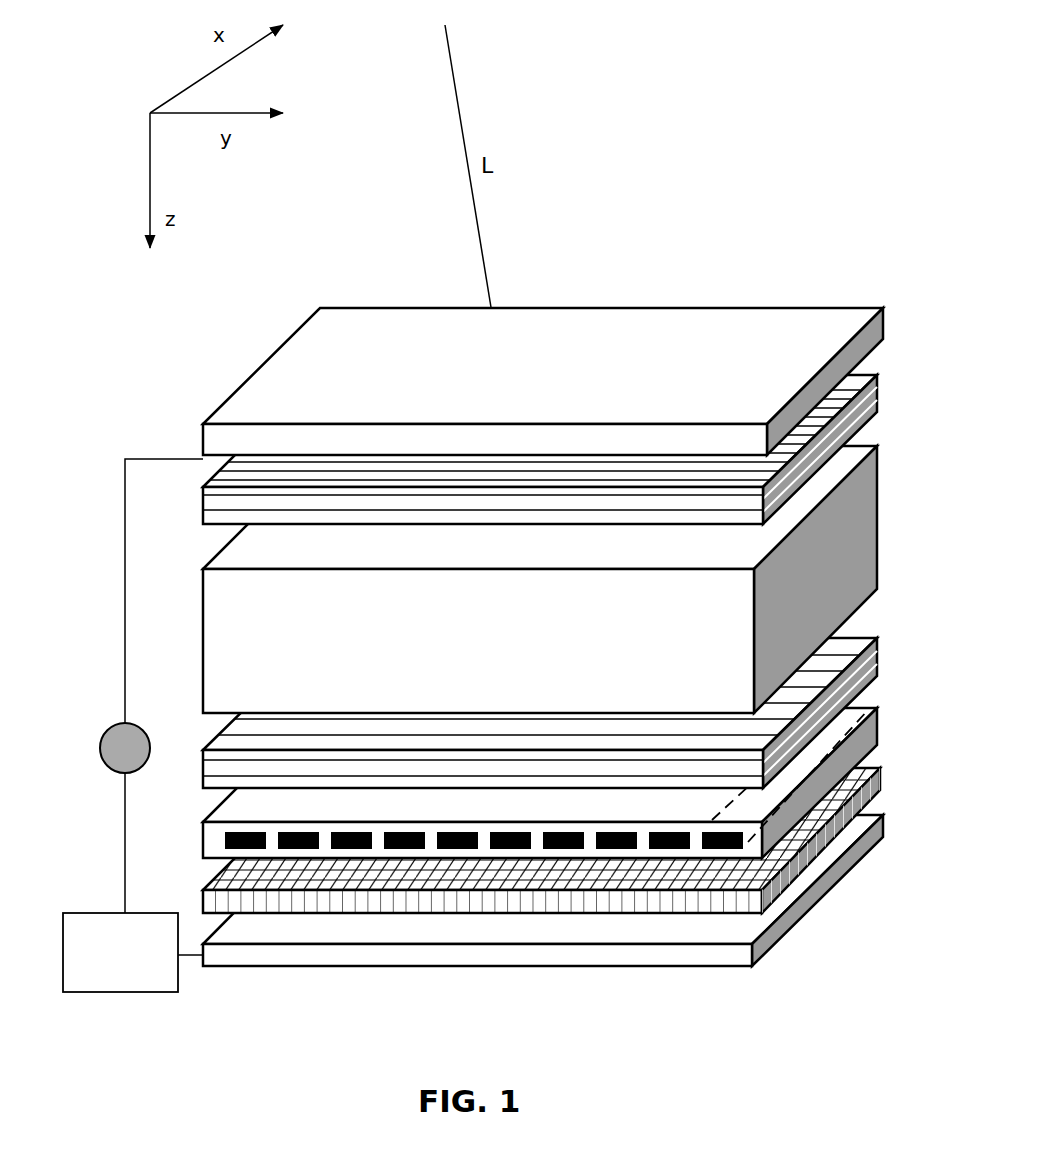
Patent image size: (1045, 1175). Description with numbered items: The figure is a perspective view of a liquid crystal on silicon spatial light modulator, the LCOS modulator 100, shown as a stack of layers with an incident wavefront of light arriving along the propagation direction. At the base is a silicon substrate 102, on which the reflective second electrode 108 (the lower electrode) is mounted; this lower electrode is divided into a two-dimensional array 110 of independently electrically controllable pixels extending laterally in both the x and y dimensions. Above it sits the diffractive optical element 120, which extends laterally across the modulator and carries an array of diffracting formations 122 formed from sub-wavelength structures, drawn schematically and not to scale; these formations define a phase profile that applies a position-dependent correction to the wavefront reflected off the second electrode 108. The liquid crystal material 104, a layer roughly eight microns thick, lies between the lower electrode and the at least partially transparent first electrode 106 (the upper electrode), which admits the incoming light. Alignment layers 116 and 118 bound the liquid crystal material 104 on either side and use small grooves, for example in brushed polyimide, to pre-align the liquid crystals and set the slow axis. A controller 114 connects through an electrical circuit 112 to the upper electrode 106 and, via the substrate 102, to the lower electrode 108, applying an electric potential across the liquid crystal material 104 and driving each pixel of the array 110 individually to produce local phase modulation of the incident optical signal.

The LCOS modulator 100 is at (390, 270).
The silicon substrate 102 is at (354, 960).
The liquid crystal material 104 is at (873, 545).
The first electrode 106 is at (872, 332).
The second electrode 108 is at (882, 767).
The two-dimensional array of independently electrically controllable pixels 110 is at (805, 870).
The electrical circuit 112 is at (125, 810).
The controller 114 is at (108, 985).
The alignment layer 116 is at (878, 665).
The alignment layer 118 is at (878, 392).
The diffractive optical element 120 is at (878, 718).
The diffracting formations 122 is at (235, 848).